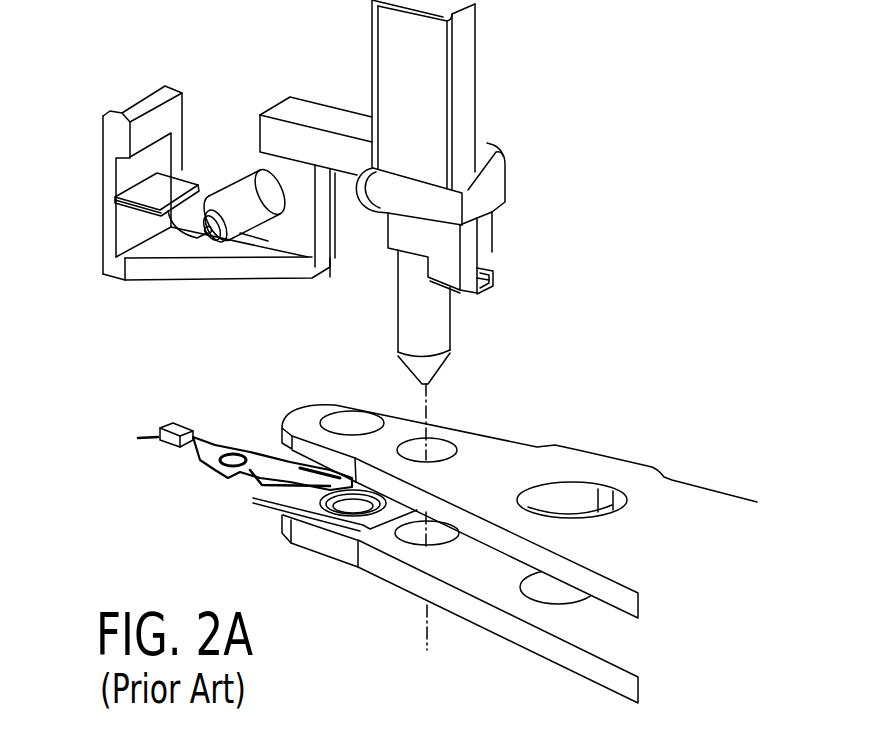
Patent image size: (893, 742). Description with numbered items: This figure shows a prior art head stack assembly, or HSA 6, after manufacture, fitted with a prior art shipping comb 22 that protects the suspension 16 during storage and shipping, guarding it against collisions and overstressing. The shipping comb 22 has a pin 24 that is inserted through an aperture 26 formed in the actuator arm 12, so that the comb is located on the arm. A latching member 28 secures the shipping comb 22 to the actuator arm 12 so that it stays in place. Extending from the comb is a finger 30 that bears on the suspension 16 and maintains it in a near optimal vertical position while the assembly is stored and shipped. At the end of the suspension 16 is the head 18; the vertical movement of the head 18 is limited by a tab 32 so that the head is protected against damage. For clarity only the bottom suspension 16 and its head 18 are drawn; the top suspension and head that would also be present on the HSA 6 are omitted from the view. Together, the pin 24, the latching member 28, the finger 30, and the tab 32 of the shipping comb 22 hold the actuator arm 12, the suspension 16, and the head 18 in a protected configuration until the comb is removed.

The HSA 6 is at (672, 219).
The actuator arm 12 is at (505, 535).
The suspension 16 is at (208, 467).
The head 18 is at (160, 443).
The shipping comb 22 is at (496, 95).
The pin 24 is at (407, 338).
The aperture 26 is at (437, 443).
The latching member 28 is at (493, 270).
The finger 30 is at (242, 190).
The tab 32 is at (157, 193).